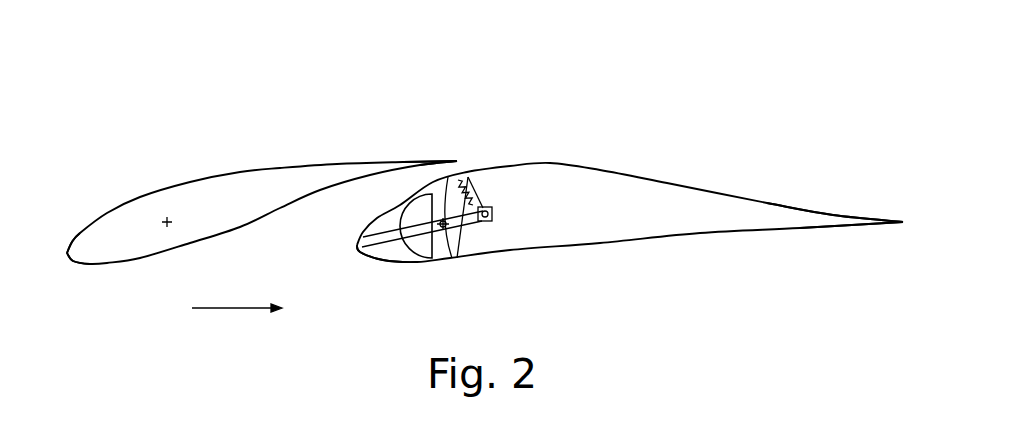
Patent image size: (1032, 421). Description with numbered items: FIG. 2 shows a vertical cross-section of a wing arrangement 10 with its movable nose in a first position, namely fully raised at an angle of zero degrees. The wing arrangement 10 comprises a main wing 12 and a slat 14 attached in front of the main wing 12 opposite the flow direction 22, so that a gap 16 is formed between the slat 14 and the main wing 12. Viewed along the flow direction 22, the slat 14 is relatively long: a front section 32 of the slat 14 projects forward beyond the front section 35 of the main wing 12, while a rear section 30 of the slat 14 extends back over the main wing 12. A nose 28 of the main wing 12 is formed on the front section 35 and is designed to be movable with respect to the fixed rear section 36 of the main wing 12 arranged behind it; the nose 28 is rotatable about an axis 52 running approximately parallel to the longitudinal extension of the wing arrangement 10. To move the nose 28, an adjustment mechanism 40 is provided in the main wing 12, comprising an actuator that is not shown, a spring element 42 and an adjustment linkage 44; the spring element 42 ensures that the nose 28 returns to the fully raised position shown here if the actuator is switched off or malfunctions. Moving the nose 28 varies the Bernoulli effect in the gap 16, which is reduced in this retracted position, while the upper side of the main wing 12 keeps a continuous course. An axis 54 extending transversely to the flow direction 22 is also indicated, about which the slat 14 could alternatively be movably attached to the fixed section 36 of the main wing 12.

The wing arrangement 10 is at (557, 70).
The main wing 12 is at (572, 195).
The slat 14 is at (212, 215).
The gap 16 is at (425, 183).
The flow direction 22 is at (237, 310).
The nose 28 is at (390, 250).
The rear section of the slat 30 is at (380, 170).
The front section of the slat 32 is at (133, 237).
The front section of the main wing 35 is at (407, 213).
The fixed rear section of the main wing 36 is at (762, 218).
The adjustment mechanism 40 is at (477, 282).
The spring element 42 is at (467, 178).
The adjustment linkage 44 is at (420, 218).
The axis of rotation 52 is at (446, 240).
The axis 54 is at (172, 215).